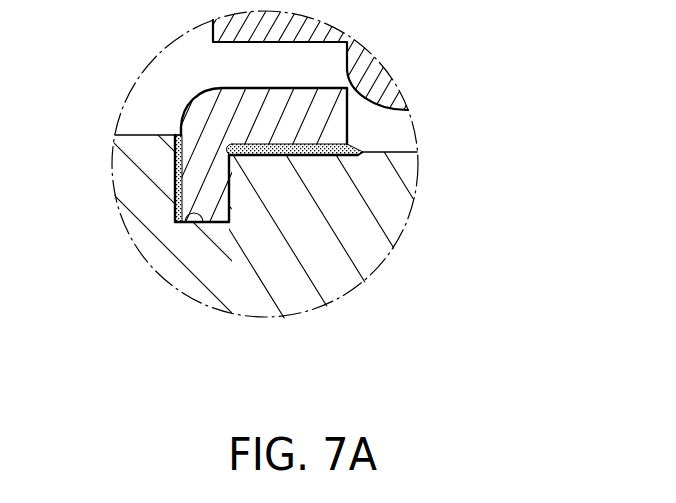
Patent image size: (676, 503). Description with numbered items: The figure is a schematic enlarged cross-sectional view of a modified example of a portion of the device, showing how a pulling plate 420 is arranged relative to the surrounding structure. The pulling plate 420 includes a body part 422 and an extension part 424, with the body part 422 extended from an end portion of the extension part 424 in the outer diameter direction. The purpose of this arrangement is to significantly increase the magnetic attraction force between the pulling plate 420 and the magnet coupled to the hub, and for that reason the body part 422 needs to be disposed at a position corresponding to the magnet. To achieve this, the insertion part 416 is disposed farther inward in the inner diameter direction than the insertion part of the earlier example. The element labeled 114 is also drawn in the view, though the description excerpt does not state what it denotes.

The housing side wall (housing 110) 114 is at (348, 243).
The pulling plate 420 is at (108, 370).
The extension part 424 is at (205, 175).
The body part 422 is at (283, 158).
The insertion part 416 is at (181, 203).